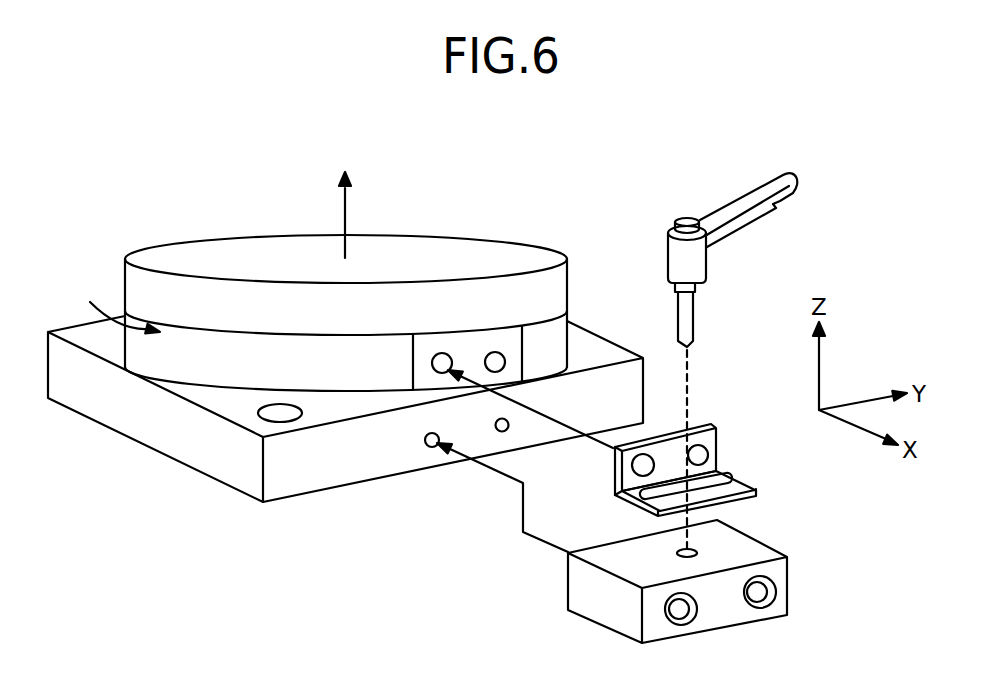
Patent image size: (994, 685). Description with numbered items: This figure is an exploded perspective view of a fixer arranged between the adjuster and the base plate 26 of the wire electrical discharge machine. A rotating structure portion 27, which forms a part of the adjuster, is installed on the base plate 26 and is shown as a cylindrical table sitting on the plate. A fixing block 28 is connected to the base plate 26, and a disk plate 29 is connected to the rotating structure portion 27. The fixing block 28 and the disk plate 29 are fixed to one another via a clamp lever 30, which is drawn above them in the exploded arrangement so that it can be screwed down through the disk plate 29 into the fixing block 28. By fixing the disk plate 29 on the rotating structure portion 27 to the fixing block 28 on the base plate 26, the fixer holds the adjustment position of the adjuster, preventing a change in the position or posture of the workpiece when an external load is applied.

The base plate 26 is at (337, 472).
The rotating structure portion 27 is at (195, 363).
The fixing block 28 is at (725, 538).
The disk plate 29 is at (732, 485).
The clamp lever 30 is at (732, 222).